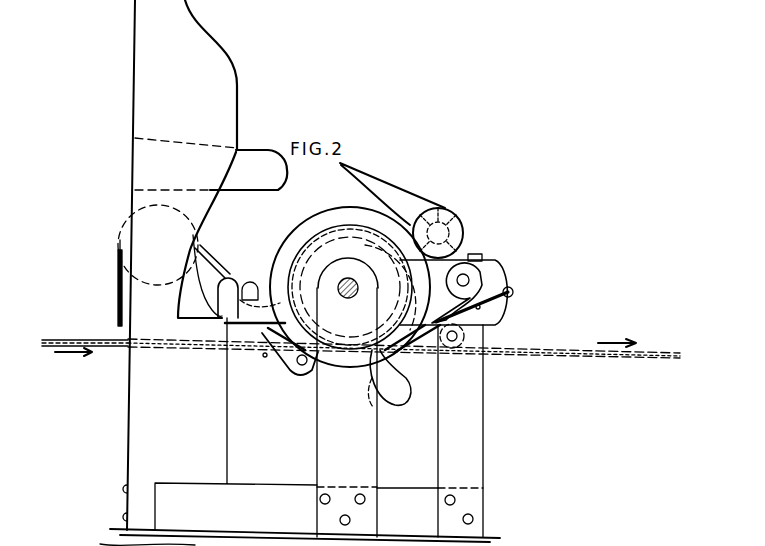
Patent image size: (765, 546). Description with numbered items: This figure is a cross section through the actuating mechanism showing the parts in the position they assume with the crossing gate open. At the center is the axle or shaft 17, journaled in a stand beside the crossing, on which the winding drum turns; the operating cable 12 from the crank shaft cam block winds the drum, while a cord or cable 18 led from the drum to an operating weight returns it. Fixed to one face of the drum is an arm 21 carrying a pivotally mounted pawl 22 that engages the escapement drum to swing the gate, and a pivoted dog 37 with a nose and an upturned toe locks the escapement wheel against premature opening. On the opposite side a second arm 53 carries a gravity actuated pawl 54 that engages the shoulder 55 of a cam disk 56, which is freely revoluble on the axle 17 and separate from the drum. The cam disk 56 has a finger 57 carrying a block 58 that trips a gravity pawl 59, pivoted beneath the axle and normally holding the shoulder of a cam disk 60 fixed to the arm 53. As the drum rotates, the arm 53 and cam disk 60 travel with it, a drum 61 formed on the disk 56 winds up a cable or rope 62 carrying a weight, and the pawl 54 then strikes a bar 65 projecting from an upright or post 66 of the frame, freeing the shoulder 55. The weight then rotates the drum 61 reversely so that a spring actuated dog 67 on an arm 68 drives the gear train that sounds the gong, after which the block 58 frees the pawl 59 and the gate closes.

The operating cable 12 is at (620, 356).
The axle or shaft 17 is at (348, 278).
The cord or cable 18 is at (118, 298).
The arm 21 is at (455, 226).
The pawl 22 is at (395, 202).
The pivoted dog 37 is at (470, 262).
The second arm 53 is at (468, 337).
The gravity actuated pawl 54 is at (400, 402).
The shoulder 55 is at (468, 246).
The cam disk 56 is at (300, 238).
The finger 57 is at (242, 285).
The block 58 is at (236, 275).
The gravity pawl 59 is at (290, 365).
The cam disk 60 is at (430, 206).
The drum 61 is at (322, 240).
The cable or rope 62 is at (110, 349).
The bar 65 is at (283, 175).
The upright or post 66 is at (140, 112).
The spring actuated dog 67 is at (466, 276).
The arm 68 is at (513, 290).